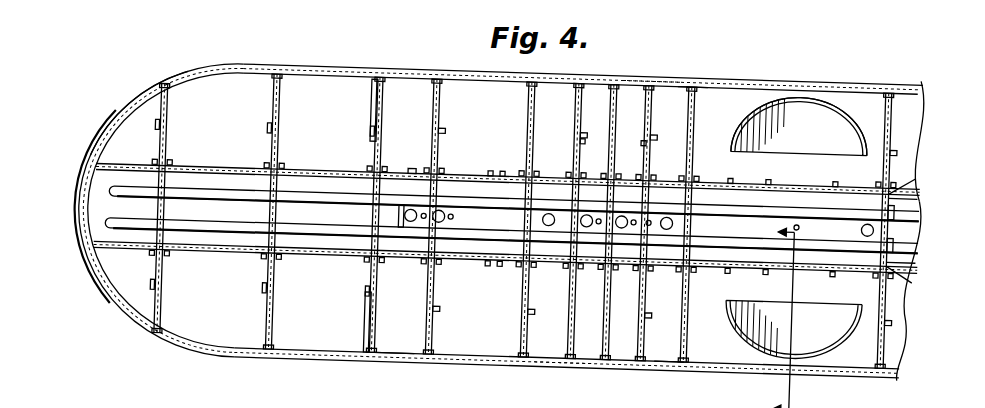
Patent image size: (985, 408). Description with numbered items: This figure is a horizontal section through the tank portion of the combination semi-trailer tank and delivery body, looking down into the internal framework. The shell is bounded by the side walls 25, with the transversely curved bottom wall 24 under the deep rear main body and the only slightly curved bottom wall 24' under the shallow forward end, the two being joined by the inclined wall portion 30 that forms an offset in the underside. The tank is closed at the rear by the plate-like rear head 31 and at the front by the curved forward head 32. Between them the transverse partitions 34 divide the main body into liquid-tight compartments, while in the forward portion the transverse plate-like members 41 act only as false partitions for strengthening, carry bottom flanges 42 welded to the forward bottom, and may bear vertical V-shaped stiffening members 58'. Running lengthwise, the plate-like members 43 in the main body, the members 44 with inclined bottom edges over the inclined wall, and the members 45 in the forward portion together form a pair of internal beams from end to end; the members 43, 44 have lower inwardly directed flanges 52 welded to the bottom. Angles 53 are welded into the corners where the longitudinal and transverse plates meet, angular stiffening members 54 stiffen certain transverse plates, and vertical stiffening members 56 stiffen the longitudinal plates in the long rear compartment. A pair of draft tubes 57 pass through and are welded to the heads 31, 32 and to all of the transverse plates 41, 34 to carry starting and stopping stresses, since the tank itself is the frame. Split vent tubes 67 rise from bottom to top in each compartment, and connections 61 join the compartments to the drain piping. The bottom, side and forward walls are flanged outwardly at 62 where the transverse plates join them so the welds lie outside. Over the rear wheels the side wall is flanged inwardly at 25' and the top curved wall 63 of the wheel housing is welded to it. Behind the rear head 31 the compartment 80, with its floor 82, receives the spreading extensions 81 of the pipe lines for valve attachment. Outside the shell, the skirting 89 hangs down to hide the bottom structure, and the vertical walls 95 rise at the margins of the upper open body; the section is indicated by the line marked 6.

The section line 6- 6 is at (796, 317).
The bottom wall 24 is at (592, 230).
The bottom wall at forward end portion 24' is at (215, 225).
The side walls 25 is at (681, 222).
The inwardly flanged portion of side wall 25' is at (823, 243).
The inclined wall portion 30 is at (397, 352).
The rear transverse wall or head 31 is at (892, 152).
The forward curved wall or head 32 is at (112, 146).
The transverse wall portions or partitions 34 is at (584, 132).
The transversely extending plate-like members 41 is at (271, 106).
The bottom flanges 42 is at (168, 102).
The plate-like members 43 is at (502, 168).
The plate-like members 44 is at (412, 164).
The plate-like members 45 is at (215, 168).
The inwardly directed flanges 52 is at (405, 180).
The angles 53 is at (168, 164).
The angular stiffening members 54 is at (442, 124).
The vertically extending stiffening members 56 is at (491, 163).
The draft tubes 57 is at (322, 201).
The vertical V-shaped stiffening members 58' is at (285, 200).
The connections 61 is at (385, 196).
The outwardly flanged portions 62 is at (165, 85).
The top curved wall 63 is at (797, 97).
The split vent tubes 67 is at (443, 207).
The compartment 80 is at (912, 312).
The extensions of the pipe lines 81 is at (922, 170).
The floor 82 is at (927, 128).
The skirting 89 is at (96, 284).
The vertical walls 95 is at (652, 72).